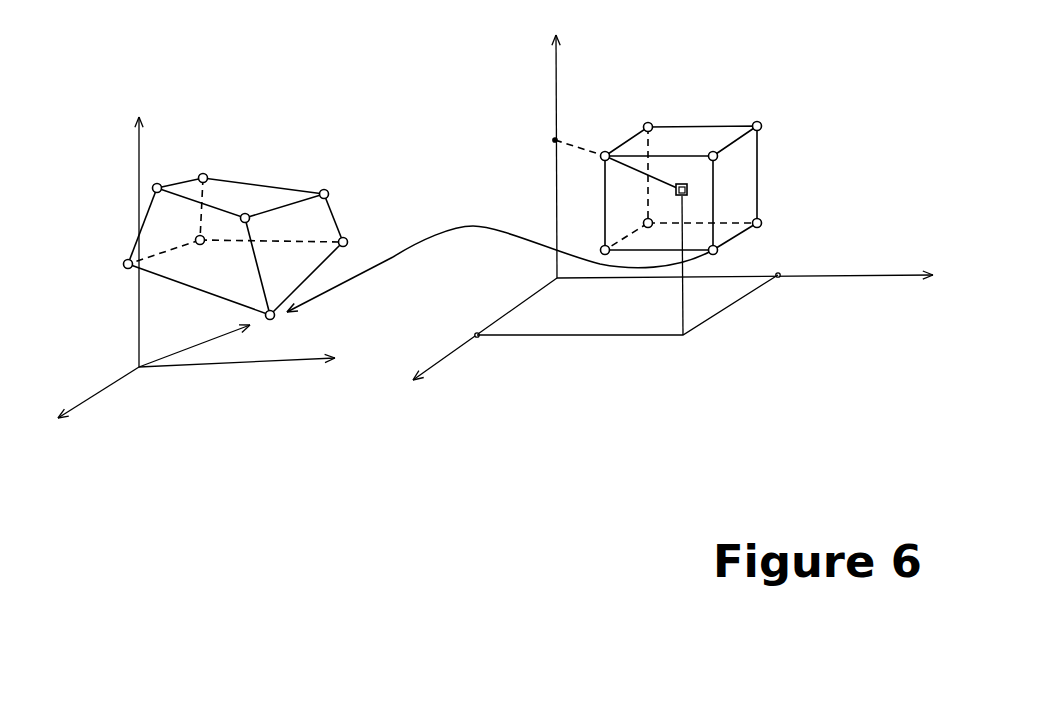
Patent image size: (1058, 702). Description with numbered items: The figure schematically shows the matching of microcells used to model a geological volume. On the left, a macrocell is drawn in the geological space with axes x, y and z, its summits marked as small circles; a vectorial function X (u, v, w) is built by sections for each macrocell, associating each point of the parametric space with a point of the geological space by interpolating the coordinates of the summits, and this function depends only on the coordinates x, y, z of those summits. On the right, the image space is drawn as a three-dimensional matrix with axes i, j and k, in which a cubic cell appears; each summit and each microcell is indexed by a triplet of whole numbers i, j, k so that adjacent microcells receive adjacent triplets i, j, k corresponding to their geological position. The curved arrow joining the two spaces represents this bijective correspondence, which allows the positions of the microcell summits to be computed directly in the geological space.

The x coordinate x is at (201, 370).
The y coordinate y is at (240, 371).
The z coordinate z is at (127, 229).
The i index i is at (485, 329).
The j index j is at (745, 256).
The k index k is at (542, 156).